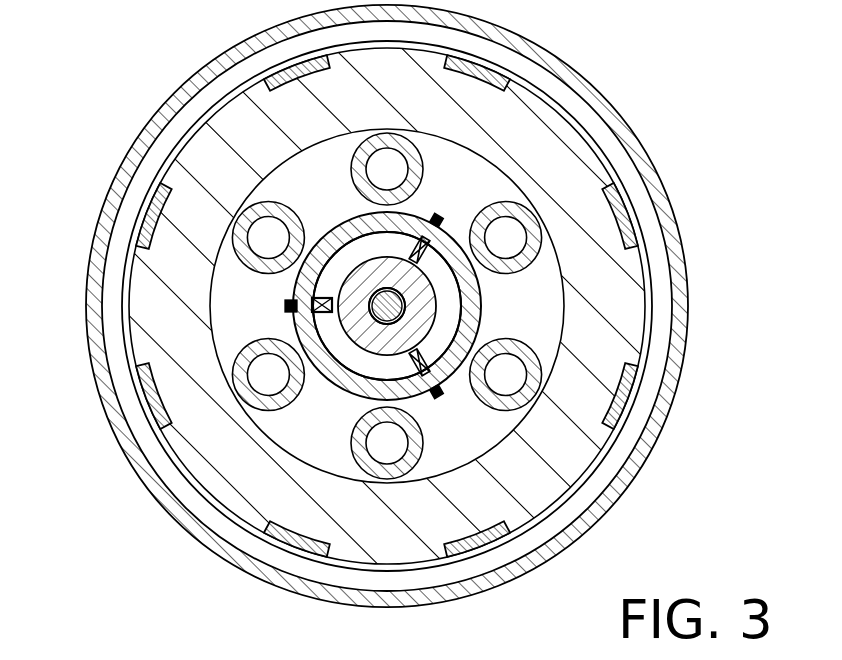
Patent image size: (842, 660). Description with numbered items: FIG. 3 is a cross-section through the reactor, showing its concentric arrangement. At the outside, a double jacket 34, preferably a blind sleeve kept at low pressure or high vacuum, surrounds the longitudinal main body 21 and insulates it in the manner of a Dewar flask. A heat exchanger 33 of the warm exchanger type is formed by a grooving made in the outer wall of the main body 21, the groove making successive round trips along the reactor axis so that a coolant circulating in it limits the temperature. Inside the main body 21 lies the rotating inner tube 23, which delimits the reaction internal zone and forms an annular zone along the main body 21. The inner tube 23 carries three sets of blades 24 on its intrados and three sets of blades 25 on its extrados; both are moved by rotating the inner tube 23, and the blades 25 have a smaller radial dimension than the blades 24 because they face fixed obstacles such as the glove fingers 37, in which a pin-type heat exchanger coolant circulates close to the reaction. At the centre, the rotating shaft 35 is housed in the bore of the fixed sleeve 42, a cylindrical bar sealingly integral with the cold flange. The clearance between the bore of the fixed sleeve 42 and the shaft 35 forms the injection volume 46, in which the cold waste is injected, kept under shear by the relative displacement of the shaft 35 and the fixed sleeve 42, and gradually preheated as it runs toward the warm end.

The main body 21 is at (152, 321).
The inner tube 23 is at (338, 375).
The blades 24 is at (296, 296).
The blades 25 is at (440, 222).
The heat exchanger 33 is at (306, 556).
The double jacket 34 is at (646, 151).
The rotating shaft 35 is at (398, 311).
The glove finger 37 is at (528, 394).
The fixed sleeve 42 is at (373, 273).
The injection volume 46 is at (412, 290).